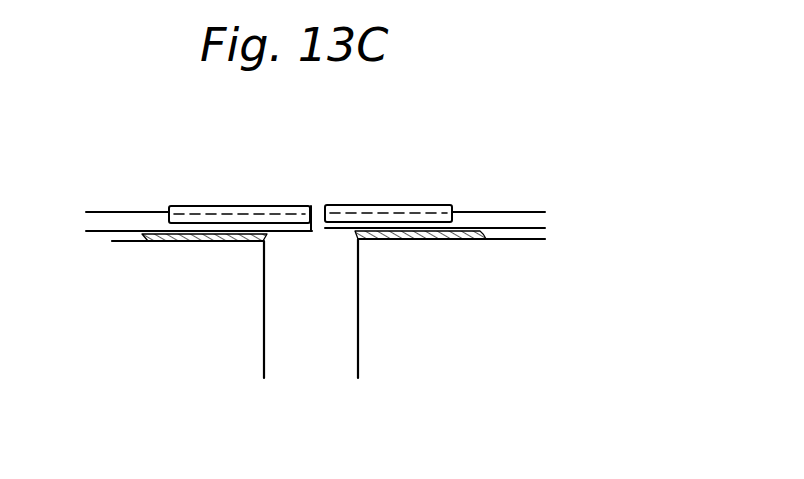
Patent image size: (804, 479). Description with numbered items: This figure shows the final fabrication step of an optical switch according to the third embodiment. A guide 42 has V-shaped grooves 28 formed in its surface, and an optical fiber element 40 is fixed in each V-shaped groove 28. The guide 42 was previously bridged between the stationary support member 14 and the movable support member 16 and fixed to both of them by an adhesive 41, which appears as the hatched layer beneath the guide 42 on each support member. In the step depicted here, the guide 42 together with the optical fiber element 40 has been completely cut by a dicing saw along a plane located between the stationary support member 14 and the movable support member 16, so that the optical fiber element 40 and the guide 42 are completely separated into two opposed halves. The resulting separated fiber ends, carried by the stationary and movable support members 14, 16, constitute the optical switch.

The stationary support member 14 is at (417, 314).
The movable support member 16 is at (197, 292).
The V-shaped groove 28 is at (293, 212).
The optical fiber element 40 is at (132, 210).
The adhesive 41 is at (481, 239).
The guide 42 is at (222, 205).